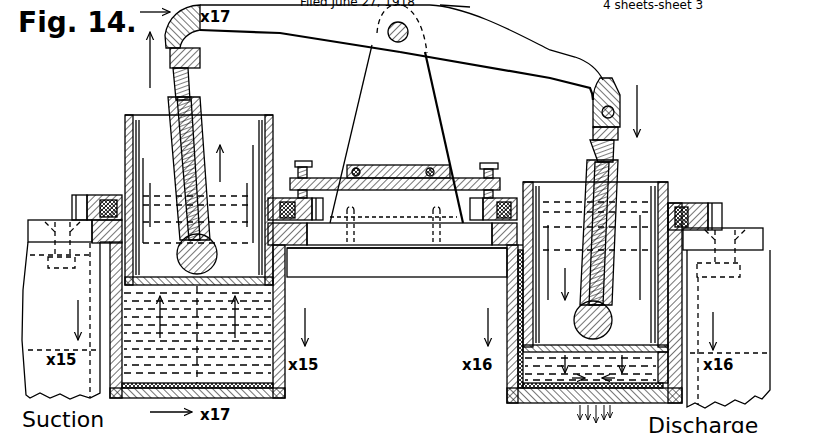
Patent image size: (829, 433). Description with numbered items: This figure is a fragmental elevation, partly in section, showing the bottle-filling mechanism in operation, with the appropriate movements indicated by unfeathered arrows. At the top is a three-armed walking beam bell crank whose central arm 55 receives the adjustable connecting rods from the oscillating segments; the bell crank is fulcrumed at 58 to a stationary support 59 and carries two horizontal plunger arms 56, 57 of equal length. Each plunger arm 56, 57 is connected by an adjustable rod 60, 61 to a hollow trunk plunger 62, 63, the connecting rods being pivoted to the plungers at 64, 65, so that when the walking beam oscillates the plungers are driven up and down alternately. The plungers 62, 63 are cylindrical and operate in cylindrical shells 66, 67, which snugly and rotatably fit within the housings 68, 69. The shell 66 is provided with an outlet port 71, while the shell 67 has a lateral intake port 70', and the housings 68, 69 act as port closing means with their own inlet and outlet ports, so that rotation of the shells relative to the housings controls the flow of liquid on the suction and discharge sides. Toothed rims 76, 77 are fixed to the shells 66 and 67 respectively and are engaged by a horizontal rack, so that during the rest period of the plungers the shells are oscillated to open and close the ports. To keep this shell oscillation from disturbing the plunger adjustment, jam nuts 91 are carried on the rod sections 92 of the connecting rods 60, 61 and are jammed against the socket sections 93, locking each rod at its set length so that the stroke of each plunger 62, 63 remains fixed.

The central arm 55 is at (455, 7).
The horizontal plunger arm 56 is at (283, 32).
The horizontal plunger arm 57 is at (530, 72).
The fulcrum 58 is at (392, 37).
The stationary support 59 is at (428, 95).
The adjustable rod 60 is at (150, 86).
The adjustable rod 61 is at (590, 135).
The hollow trunk plunger 62 is at (125, 131).
The hollow trunk plunger 63 is at (527, 181).
The pivot 64 is at (217, 256).
The pivot 65 is at (612, 322).
The cylindrical shell 66 is at (285, 297).
The cylindrical shell 67 is at (507, 267).
The housing 68 is at (292, 280).
The housing 69 is at (508, 283).
The lateral intake port 70' is at (570, 377).
The outlet port 71 is at (265, 398).
The toothed rim 76 is at (72, 196).
The toothed rim 77 is at (722, 192).
The jam nut 91 is at (197, 100).
The rod section 92 is at (189, 80).
The socket section 93 is at (201, 112).